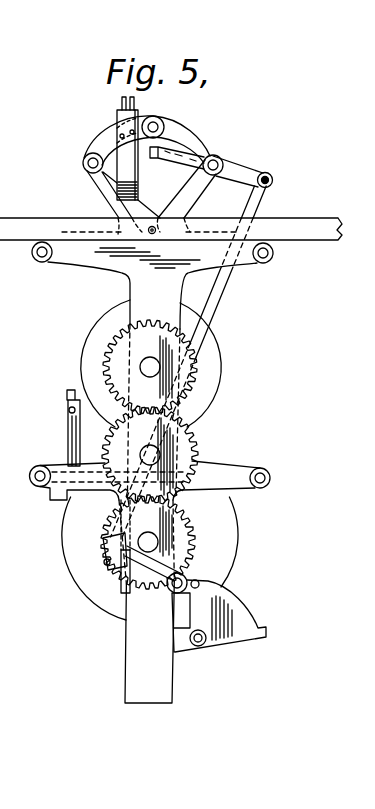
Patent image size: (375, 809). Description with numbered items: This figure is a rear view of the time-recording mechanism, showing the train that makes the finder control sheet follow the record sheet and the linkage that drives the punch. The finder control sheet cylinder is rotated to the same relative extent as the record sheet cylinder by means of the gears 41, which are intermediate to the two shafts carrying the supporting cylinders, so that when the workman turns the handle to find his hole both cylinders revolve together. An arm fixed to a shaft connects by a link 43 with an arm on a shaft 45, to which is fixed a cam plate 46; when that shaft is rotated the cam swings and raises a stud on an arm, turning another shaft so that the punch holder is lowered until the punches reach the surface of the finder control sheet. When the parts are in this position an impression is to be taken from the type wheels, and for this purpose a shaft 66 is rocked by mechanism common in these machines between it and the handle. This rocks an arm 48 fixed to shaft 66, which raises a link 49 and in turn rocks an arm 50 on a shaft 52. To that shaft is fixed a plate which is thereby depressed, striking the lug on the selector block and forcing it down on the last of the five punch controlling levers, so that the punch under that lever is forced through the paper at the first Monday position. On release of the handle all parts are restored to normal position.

The gears 41 is at (191, 428).
The link 43 is at (192, 508).
The shaft 45 is at (199, 647).
The cam plate 46 is at (238, 612).
The arm 48 is at (258, 158).
The link 49 is at (222, 283).
The arm 50 is at (106, 566).
The shaft 52 is at (127, 572).
The shaft 66 is at (217, 160).